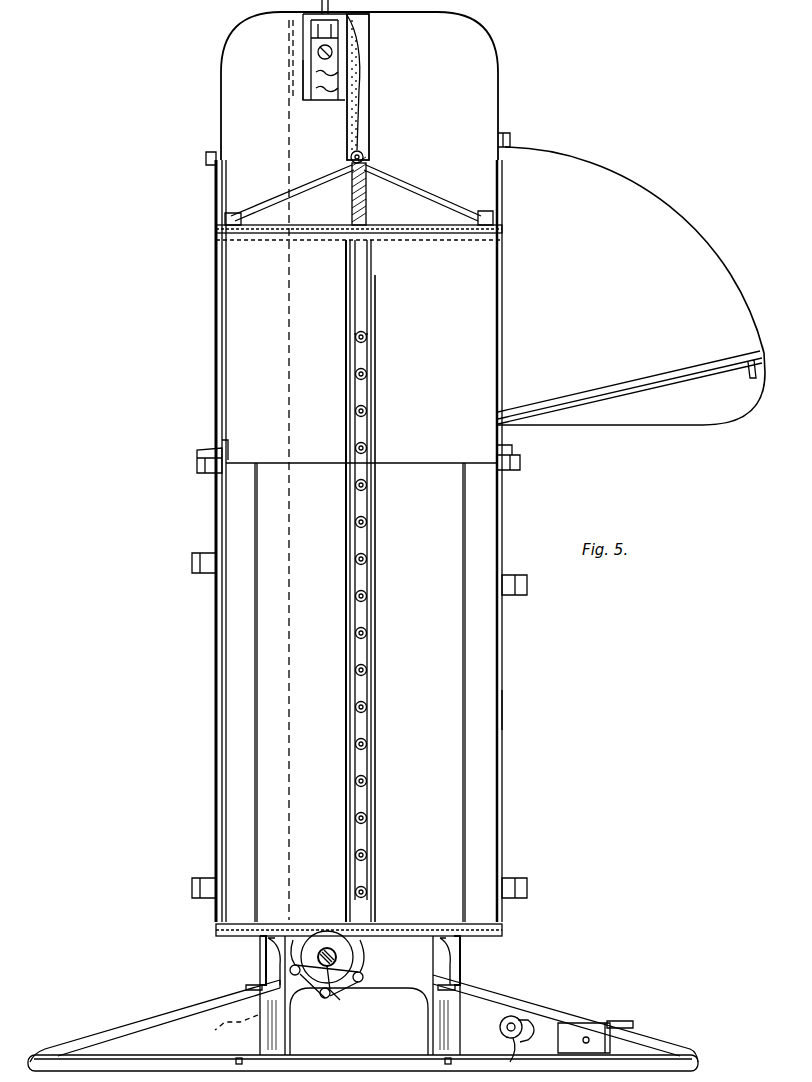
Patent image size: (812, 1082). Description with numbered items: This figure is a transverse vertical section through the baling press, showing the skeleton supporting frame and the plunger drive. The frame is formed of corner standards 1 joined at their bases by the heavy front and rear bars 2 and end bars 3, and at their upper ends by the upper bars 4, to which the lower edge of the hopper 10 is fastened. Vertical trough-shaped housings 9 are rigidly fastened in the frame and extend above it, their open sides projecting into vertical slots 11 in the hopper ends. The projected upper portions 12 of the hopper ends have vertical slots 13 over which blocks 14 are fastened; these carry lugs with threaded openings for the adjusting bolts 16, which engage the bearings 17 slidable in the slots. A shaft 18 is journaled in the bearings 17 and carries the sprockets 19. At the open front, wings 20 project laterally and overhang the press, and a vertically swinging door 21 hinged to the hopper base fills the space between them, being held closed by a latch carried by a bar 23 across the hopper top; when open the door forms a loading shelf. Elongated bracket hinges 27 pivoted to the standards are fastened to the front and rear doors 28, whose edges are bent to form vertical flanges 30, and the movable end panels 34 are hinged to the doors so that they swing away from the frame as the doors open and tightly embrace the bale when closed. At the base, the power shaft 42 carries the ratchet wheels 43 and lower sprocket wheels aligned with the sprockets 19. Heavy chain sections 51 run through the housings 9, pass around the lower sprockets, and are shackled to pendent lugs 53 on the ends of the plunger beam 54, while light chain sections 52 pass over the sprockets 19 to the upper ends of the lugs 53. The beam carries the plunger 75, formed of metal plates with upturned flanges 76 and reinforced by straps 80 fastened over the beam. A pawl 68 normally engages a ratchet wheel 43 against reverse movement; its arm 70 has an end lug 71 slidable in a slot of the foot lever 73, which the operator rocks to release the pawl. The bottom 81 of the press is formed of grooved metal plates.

The corner standards 1 is at (278, 958).
The front and rear base bars 2 is at (248, 952).
The end bars 3 is at (348, 957).
The upper bars 4 is at (200, 448).
The trough-shaped housings 9 is at (375, 778).
The hopper 10 is at (216, 330).
The vertical slots 11 is at (370, 142).
The projected upper portions 12 is at (478, 42).
The vertical slots 13 is at (306, 30).
The blocks 14 is at (345, 14).
The adjusting bolts 16 is at (303, 20).
The bearings 17 is at (318, 70).
The shaft 18 is at (332, 54).
The sprockets 19 is at (356, 48).
The wings 20 is at (631, 286).
The vertically swinging door 21 is at (624, 386).
The bar 23 is at (508, 140).
The bracket hinges 27 is at (195, 563).
The front and rear doors 28 is at (216, 728).
The vertical flanges 30 is at (382, 692).
The movable end panels 34 is at (360, 692).
The power shaft 42 is at (336, 996).
The ratchet wheels 43 is at (363, 978).
The heavy chain sections 51 is at (368, 600).
The light chain sections 52 is at (362, 112).
The pendent lugs 53 is at (373, 160).
The plunger beam 54 is at (367, 208).
The pawl 68 is at (358, 1021).
The arm 70 is at (490, 1017).
The end lug 71 is at (518, 1028).
The foot lever 73 is at (630, 1022).
The plunger 75 is at (445, 242).
The upturned flanges 76 is at (422, 232).
The straps 80 is at (359, 188).
The bottom 81 is at (395, 926).